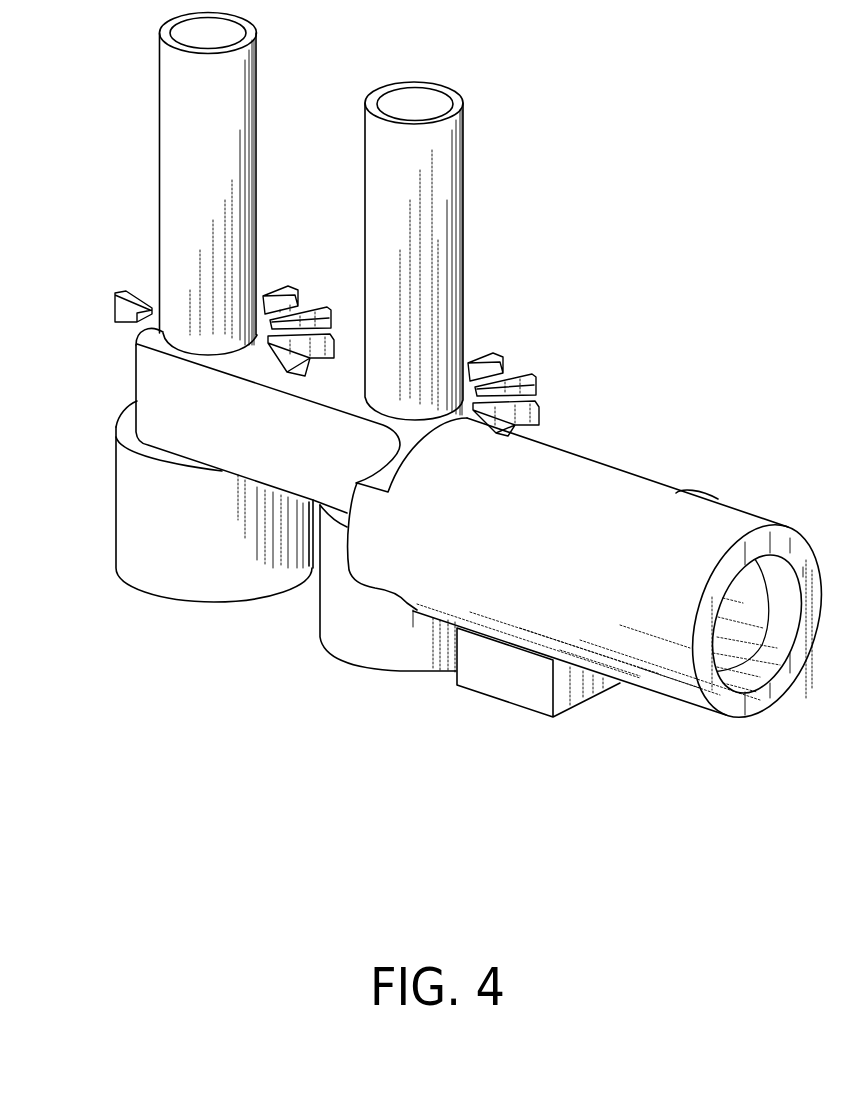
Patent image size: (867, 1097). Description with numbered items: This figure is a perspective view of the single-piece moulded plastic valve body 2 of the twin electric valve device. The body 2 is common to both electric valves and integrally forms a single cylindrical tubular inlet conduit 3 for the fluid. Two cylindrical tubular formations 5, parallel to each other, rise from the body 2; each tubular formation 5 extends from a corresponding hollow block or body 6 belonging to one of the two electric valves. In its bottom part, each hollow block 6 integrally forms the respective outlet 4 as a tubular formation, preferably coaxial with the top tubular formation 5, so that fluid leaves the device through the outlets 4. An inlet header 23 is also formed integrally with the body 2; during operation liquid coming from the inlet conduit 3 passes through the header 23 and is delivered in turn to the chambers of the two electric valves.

The valve body 2 is at (552, 353).
The tubular inlet conduit 3 is at (621, 512).
The outlet 4 is at (343, 633).
The cylindrical tubular formation 5 is at (380, 220).
The hollow block 6 is at (120, 322).
The inlet header 23 is at (200, 420).